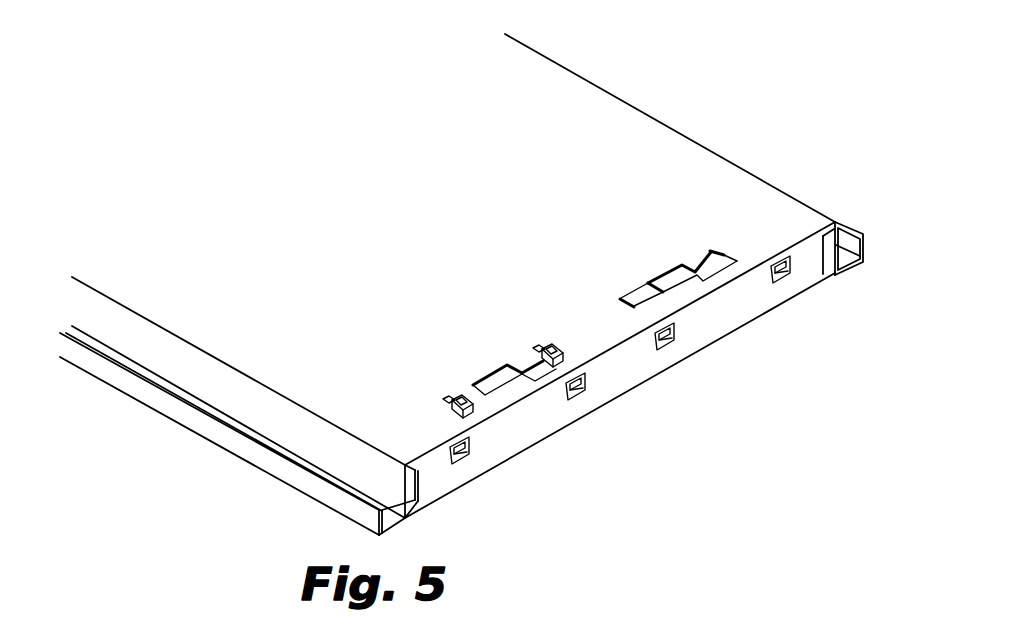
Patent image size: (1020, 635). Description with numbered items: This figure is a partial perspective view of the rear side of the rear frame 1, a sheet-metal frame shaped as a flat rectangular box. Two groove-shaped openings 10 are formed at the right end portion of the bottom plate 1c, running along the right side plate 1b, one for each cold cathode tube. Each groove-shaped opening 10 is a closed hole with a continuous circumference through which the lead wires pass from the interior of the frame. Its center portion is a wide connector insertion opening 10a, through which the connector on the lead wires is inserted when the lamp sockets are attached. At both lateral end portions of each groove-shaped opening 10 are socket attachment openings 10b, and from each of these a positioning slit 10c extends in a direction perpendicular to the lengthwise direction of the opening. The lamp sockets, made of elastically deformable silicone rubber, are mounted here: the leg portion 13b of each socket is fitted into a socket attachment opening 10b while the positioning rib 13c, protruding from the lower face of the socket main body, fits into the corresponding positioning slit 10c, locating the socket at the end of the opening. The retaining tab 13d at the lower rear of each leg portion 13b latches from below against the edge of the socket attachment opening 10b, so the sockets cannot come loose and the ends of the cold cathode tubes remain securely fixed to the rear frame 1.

The rear frame 1 is at (476, 284).
The right side plate 1b is at (815, 273).
The bottom plate 1c is at (600, 127).
The groove-shaped opening 10 is at (617, 329).
The wide connector insertion opening 10a is at (495, 370).
The socket attachment opening 10b is at (620, 310).
The positioning slit 10c is at (621, 298).
The leg portion 13b is at (457, 399).
The positioning rib 13c is at (443, 401).
The retaining tab 13d is at (470, 414).